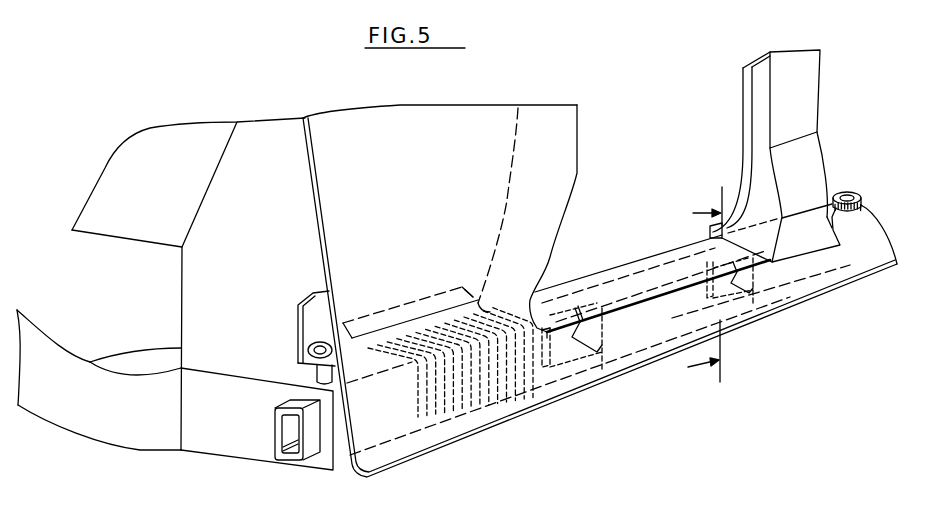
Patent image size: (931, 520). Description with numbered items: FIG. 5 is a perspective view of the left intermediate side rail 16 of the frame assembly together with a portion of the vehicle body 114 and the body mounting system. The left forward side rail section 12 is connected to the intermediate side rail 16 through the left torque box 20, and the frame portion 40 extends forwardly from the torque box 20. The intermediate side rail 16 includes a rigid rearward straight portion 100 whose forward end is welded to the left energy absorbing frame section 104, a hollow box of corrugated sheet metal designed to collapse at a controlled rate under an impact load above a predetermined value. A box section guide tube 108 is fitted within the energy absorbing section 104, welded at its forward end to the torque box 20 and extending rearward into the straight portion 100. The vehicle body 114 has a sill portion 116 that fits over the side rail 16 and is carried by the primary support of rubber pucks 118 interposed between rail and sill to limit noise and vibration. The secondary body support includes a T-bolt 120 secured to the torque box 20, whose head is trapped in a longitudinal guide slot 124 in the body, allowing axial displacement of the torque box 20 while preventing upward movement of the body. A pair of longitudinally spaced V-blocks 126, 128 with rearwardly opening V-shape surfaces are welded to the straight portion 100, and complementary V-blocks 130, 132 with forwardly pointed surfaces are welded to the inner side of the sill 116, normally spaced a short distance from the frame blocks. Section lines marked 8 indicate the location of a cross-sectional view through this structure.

The left forward side rail section 12 is at (97, 427).
The frame portion 40 is at (145, 440).
The left torque box 20 is at (238, 445).
The box section guide tube 108 is at (312, 449).
The rigid rearward straight portion 100 is at (860, 268).
The left energy absorbing frame section 104 is at (470, 420).
The vehicle body 114 is at (573, 179).
The sill portion 116 is at (623, 260).
The rubber puck 118 is at (857, 179).
The left T-bolt 120 is at (303, 342).
The guide slot 124 is at (307, 368).
The V-block 126 is at (560, 372).
The V-block 128 is at (741, 301).
The complementary V-block 130 is at (603, 373).
The complementary V-block 132 is at (760, 302).
The left intermediate side rail 16 is at (668, 336).
The section line 8- 8 is at (705, 290).